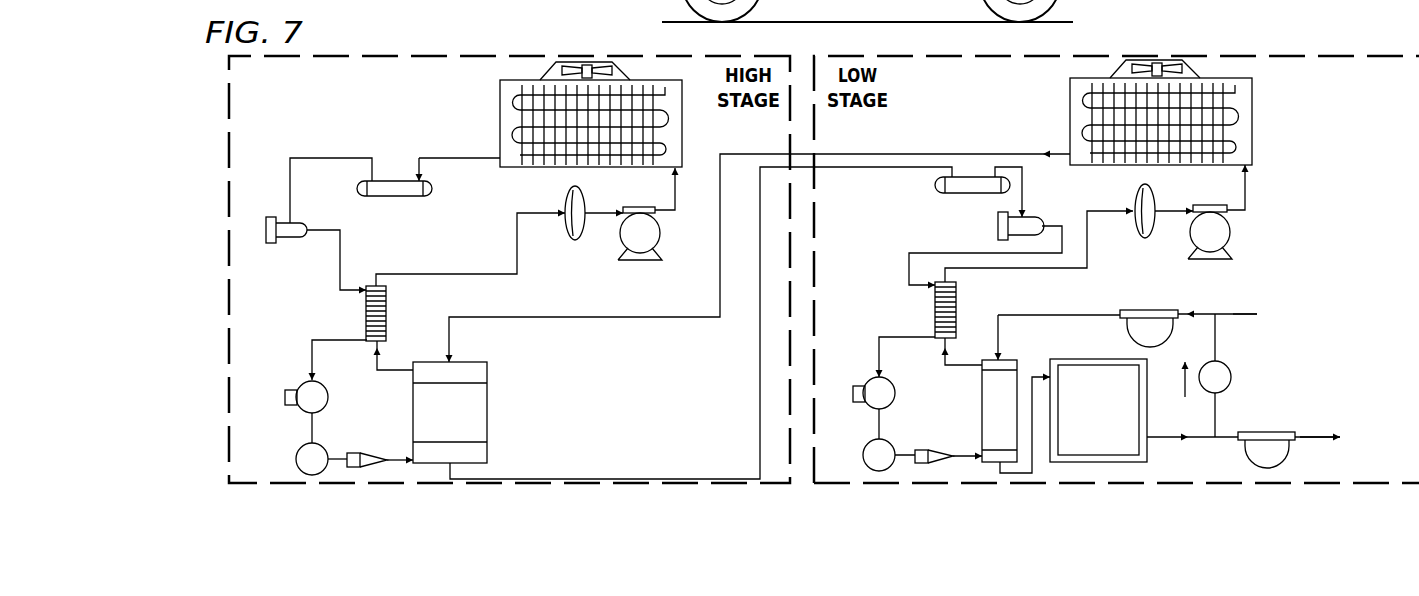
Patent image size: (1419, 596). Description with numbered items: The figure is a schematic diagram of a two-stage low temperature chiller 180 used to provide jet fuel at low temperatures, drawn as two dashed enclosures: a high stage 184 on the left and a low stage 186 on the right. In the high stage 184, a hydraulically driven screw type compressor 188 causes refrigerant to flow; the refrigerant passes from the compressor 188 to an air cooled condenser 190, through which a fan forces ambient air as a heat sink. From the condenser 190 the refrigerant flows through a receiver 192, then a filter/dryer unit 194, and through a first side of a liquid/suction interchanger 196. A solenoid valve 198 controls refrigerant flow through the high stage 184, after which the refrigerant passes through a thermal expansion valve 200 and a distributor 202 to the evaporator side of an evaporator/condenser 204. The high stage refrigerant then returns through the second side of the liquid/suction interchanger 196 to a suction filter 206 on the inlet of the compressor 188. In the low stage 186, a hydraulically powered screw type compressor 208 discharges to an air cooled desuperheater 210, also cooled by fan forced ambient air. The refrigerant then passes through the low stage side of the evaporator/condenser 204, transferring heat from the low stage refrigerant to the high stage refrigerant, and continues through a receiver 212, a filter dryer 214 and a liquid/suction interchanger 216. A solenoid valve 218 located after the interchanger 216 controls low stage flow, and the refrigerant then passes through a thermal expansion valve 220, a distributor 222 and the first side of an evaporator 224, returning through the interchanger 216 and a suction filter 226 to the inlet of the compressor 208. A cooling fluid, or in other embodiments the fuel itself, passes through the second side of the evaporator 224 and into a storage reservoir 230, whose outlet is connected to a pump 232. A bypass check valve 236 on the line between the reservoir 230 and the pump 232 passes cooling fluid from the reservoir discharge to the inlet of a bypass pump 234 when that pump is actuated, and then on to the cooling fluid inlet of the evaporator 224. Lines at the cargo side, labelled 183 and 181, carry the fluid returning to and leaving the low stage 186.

The low temperature chiller 180 is at (625, 38).
The outlet to cargo space 181 is at (1318, 437).
The return from cargo space 183 is at (1233, 314).
The high stage 184 is at (220, 122).
The low stage 186 is at (1332, 44).
The compressor 188 is at (660, 238).
The condenser 190 is at (545, 90).
The receiver 192 is at (383, 196).
The filter/dryer unit 194 is at (295, 238).
The liquid/suction interchanger 196 is at (366, 323).
The solenoid valve 198 is at (301, 381).
The thermal expansion valve 200 is at (296, 462).
The distributor 202 is at (362, 452).
The evaporator/condenser 204 is at (480, 425).
The suction filter 206 is at (571, 240).
The compressor 208 is at (1226, 236).
The air cooled desuperheater 210 is at (1197, 85).
The receiver 212 is at (937, 192).
The filter dryer 214 is at (998, 218).
The liquid/suction interchanger 216 is at (937, 316).
The solenoid valve 218 is at (867, 382).
The thermal expansion valve 220 is at (863, 459).
The distributor 222 is at (930, 453).
The evaporator 224 is at (990, 410).
The suction filter 226 is at (1138, 197).
The storage reservoir 230 is at (1117, 411).
The pump 232 is at (1263, 432).
The bypass pump 234 is at (1152, 312).
The bypass check valve 236 is at (1226, 364).